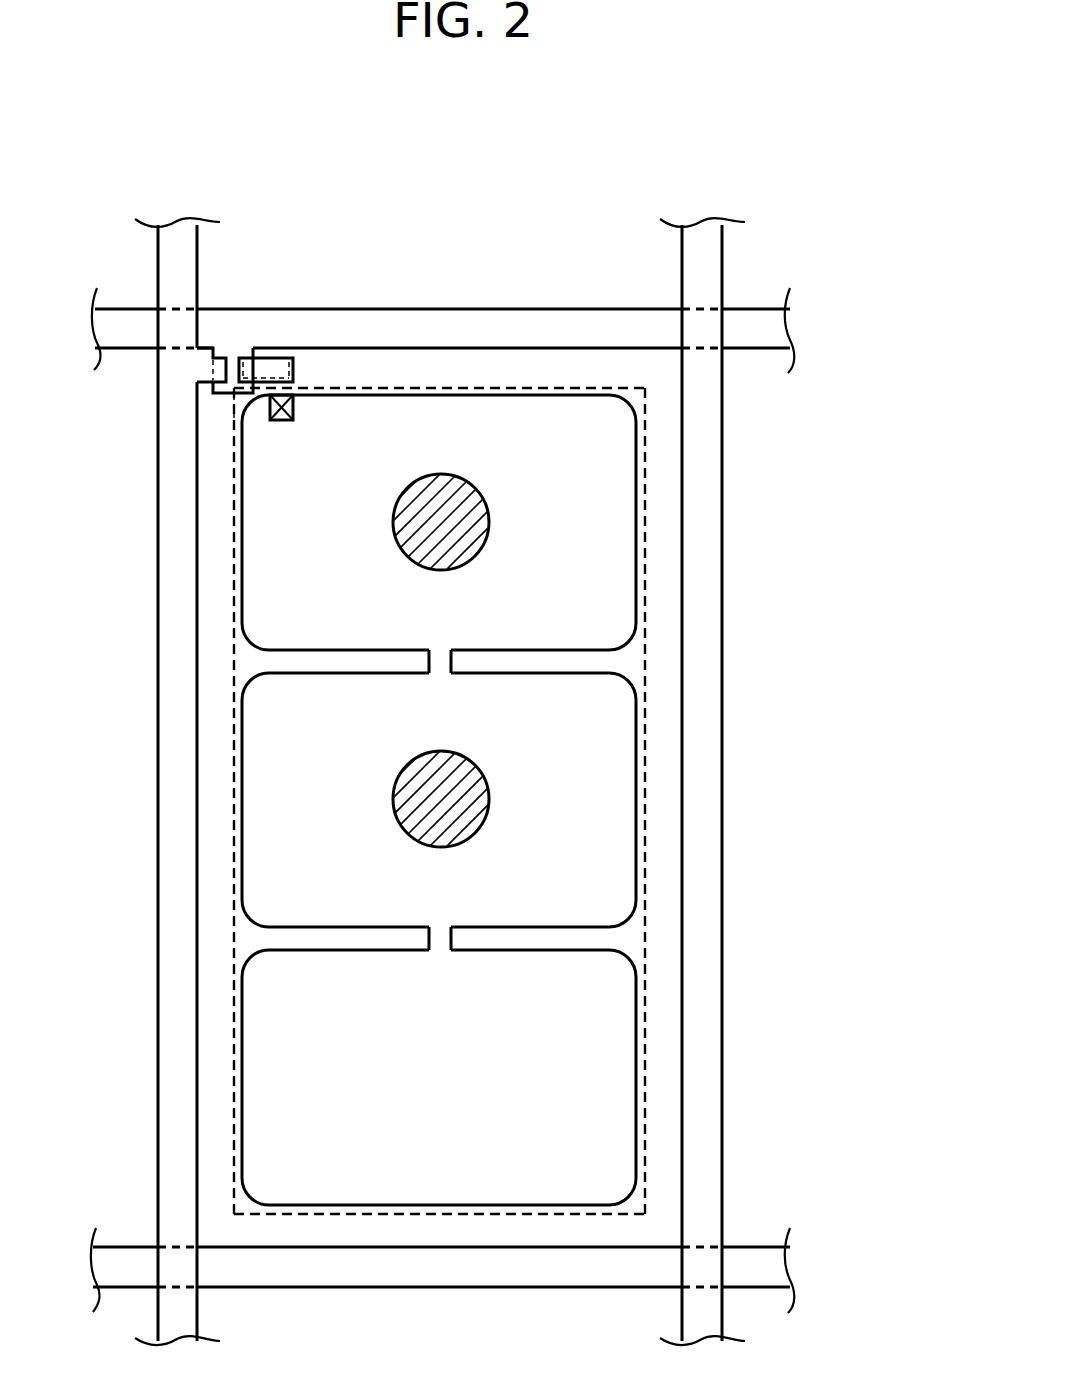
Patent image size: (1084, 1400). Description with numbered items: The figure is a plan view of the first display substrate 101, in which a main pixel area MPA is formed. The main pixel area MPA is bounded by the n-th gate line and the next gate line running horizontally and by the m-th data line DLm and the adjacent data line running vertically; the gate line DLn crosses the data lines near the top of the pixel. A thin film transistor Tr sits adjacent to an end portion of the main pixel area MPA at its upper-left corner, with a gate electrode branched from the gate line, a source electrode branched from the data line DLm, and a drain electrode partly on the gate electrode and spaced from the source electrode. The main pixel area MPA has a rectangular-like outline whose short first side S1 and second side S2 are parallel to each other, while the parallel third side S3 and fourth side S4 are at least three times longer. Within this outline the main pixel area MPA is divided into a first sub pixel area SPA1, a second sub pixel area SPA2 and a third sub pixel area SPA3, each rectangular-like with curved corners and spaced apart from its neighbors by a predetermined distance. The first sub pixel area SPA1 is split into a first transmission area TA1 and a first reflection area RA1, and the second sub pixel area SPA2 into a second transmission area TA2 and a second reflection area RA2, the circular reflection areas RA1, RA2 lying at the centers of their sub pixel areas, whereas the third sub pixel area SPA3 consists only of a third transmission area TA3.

The first display substrate 101 is at (467, 162).
The m-th data line DLm is at (187, 263).
The n-th gate line DLn is at (768, 328).
The thin film transistor Tr is at (225, 410).
The first side S1 is at (368, 1215).
The second side S2 is at (375, 388).
The third side S3 is at (234, 556).
The fourth side S4 is at (647, 595).
The first sub pixel area SPA1 is at (611, 486).
The second sub pixel area SPA2 is at (611, 751).
The third sub pixel area SPA3 is at (610, 1049).
The main pixel area MPA is at (625, 654).
The first transmission area TA1 is at (439, 522).
The second transmission area TA2 is at (439, 800).
The third transmission area TA3 is at (439, 1077).
The first reflection area RA1 is at (471, 514).
The second reflection area RA2 is at (471, 800).